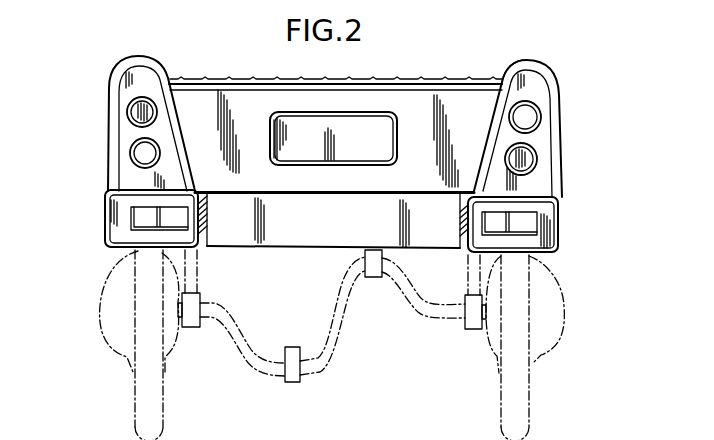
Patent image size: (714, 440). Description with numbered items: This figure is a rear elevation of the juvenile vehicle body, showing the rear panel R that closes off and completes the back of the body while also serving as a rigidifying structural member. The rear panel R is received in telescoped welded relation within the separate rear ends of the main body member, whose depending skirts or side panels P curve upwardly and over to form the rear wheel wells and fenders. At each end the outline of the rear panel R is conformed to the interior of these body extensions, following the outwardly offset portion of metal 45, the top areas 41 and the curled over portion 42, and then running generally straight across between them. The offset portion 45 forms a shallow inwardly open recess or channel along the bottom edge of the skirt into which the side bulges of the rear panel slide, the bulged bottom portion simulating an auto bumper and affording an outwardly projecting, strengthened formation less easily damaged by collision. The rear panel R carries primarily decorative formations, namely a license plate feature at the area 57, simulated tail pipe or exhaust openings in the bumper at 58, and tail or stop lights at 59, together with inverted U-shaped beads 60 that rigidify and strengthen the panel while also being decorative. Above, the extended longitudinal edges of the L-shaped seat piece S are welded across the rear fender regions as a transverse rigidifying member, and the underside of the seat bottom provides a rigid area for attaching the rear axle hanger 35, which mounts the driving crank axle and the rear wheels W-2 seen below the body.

The rear axle hanger 35 is at (198, 268).
The top areas 41 is at (549, 75).
The curled over portion 42 is at (500, 71).
The outwardly offset portion of metal 45 is at (562, 236).
The license plate feature area 57 is at (380, 135).
The simulated tail pipe openings 58 is at (522, 217).
The tail or stop lights 59 is at (130, 148).
The inverted U-shaped beads 60 is at (115, 99).
The side panels P is at (563, 162).
The rear panel R is at (394, 108).
The seat piece S is at (444, 79).
The rear wheels W-2 is at (128, 372).